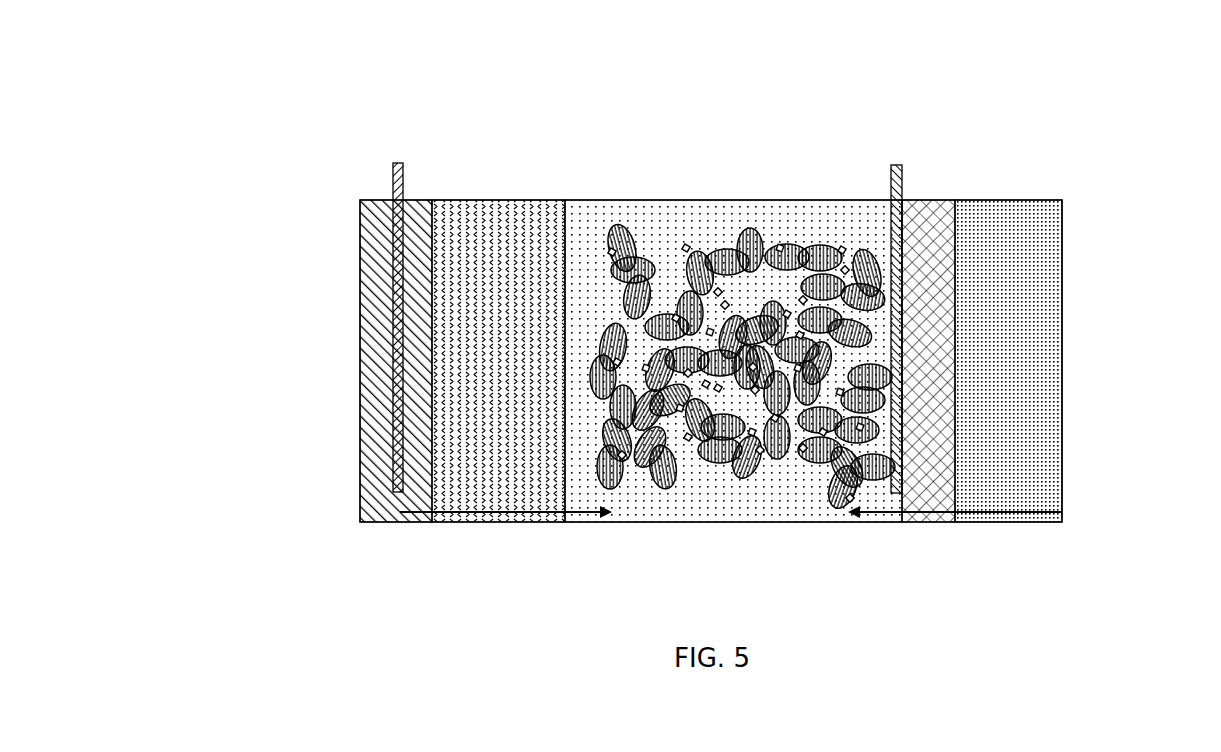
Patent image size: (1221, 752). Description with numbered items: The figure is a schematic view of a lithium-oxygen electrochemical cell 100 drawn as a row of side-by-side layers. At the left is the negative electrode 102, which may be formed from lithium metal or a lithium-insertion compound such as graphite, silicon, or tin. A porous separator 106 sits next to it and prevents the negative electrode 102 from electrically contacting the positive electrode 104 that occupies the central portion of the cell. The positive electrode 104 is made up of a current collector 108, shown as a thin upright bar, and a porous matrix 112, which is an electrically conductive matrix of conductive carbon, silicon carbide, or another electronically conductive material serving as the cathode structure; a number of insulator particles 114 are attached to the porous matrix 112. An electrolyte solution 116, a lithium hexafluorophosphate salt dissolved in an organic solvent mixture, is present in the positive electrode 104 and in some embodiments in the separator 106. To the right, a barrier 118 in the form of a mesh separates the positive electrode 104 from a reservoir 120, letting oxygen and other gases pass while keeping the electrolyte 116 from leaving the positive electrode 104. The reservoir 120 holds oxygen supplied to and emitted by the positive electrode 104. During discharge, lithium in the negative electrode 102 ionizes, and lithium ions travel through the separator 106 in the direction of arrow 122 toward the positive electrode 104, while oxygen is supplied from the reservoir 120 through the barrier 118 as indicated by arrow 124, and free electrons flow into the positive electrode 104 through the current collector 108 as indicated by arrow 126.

The electrochemical cell 100 is at (282, 155).
The negative electrode 102 is at (360, 310).
The positive electrode 104 is at (758, 372).
The porous separator 106 is at (480, 522).
The current collector 108 is at (898, 167).
The porous matrix 112 is at (752, 240).
The insulator particles 114 is at (678, 245).
The electrolyte solution 116 is at (724, 505).
The barrier 118 is at (936, 200).
The reservoir 120 is at (1062, 328).
The arrow 122 is at (548, 522).
The arrow 124 is at (990, 522).
The arrow 126 is at (883, 142).